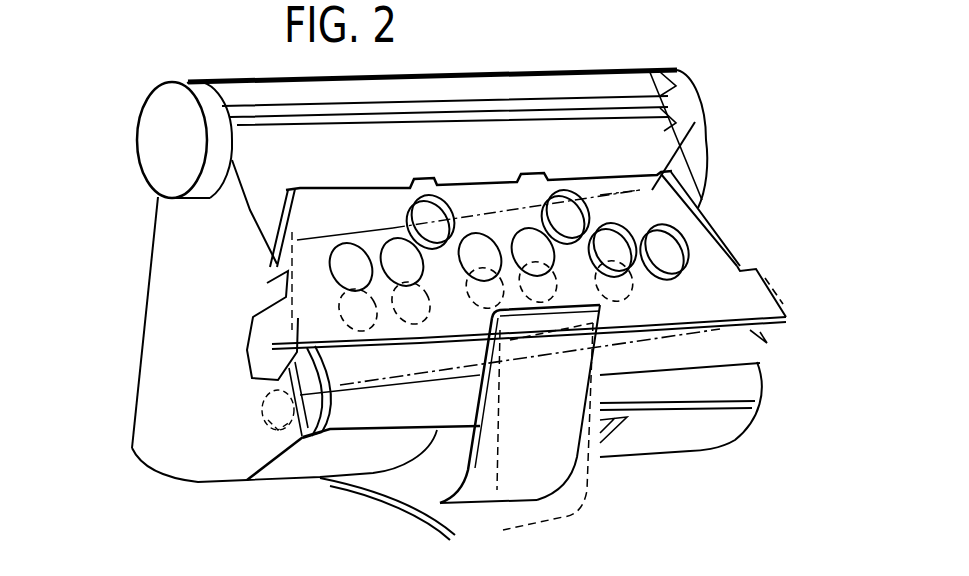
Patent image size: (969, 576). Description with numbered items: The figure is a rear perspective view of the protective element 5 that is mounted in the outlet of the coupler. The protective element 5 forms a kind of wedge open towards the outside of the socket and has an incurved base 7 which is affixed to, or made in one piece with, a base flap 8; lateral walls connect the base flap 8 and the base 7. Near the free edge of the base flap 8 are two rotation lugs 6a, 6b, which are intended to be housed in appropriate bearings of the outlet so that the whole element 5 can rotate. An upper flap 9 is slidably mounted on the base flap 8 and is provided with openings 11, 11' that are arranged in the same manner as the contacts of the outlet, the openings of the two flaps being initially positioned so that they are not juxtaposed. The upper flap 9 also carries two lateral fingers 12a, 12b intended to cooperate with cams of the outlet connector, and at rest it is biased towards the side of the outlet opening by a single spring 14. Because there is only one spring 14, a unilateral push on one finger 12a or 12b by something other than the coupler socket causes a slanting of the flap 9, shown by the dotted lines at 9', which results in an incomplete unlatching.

The protective element 5 is at (122, 276).
The rotation lug 6a is at (703, 100).
The rotation lug 6b is at (147, 100).
The incurved base 7 is at (284, 460).
The base flap 8 is at (517, 127).
The upper flap 9 is at (541, 260).
The slanted position of upper flap 9' is at (698, 165).
The opening of upper flap 11 is at (506, 180).
The opening of upper flap 11' is at (571, 152).
The lateral finger 12a is at (775, 334).
The lateral finger 12b is at (245, 351).
The spring 14 is at (443, 527).